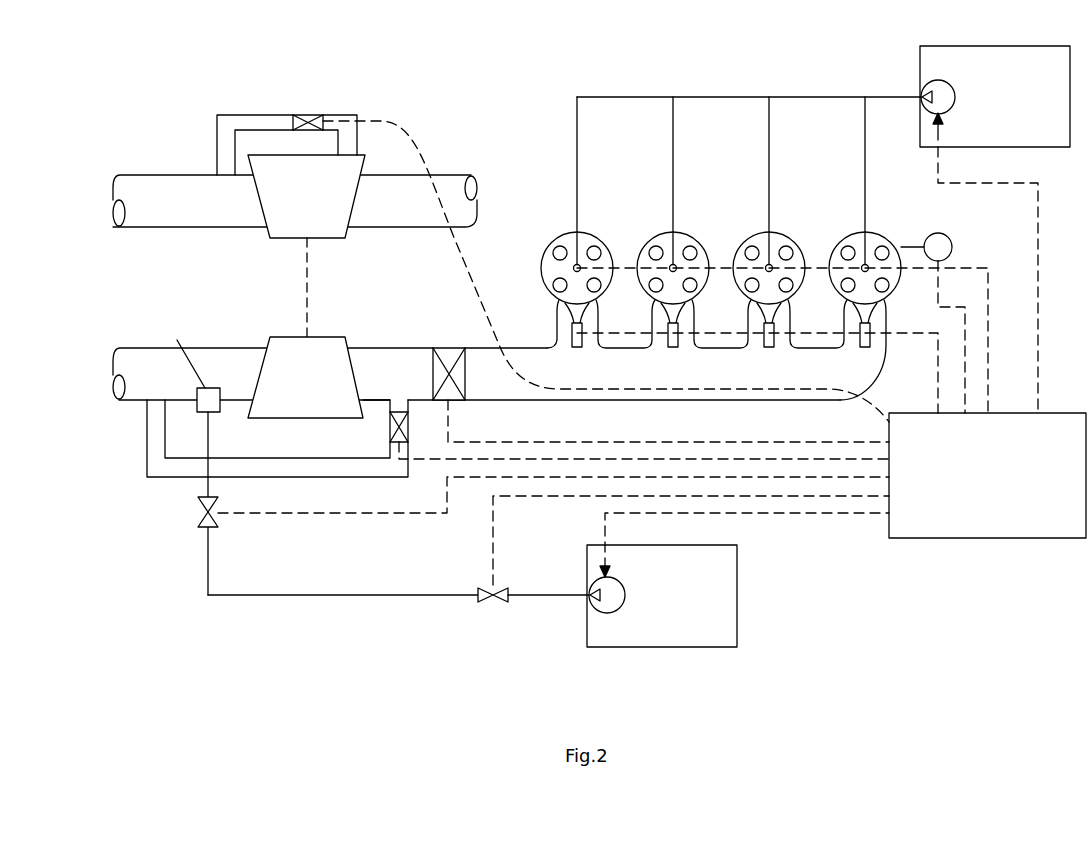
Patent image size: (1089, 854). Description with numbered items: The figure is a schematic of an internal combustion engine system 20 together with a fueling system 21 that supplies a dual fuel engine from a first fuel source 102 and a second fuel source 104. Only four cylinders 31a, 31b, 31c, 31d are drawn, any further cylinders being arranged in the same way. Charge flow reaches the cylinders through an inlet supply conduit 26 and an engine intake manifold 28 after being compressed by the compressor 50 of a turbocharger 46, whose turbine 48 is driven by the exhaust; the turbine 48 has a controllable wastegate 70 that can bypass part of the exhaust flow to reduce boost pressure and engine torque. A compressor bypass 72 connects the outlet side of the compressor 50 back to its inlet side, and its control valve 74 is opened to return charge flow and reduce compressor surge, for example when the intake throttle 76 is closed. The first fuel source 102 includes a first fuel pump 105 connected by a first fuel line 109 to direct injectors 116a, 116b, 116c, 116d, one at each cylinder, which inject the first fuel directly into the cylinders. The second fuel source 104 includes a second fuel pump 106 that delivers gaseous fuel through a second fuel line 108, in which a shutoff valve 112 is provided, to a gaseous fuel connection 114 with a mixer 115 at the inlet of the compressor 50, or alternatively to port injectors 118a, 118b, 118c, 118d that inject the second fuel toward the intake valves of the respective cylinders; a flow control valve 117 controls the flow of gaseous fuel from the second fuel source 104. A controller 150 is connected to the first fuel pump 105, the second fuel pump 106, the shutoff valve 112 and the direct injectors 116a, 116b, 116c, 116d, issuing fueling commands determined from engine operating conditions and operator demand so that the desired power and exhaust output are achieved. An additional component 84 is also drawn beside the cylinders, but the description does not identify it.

The internal combustion engine system 20 is at (490, 102).
The fueling system 21 is at (857, 559).
The inlet supply conduit 26 is at (130, 348).
The engine intake manifold 28 is at (664, 400).
The cylinder 31a is at (840, 238).
The cylinder 31b is at (744, 238).
The cylinder 31c is at (648, 238).
The cylinder 31d is at (552, 238).
The turbocharger 46 is at (286, 296).
The turbine 48 is at (306, 196).
The compressor 50 is at (305, 377).
The controllable wastegate 70 is at (308, 114).
The compressor bypass 72 is at (150, 477).
The control valve 74 is at (396, 412).
The intake throttle 76 is at (446, 348).
The exhaust gas sensor 84 is at (928, 236).
The first fuel source 102 is at (995, 96).
The second fuel source 104 is at (662, 596).
The first fuel pump 105 is at (952, 84).
The second fuel pump 106 is at (624, 604).
The second fuel line 108 is at (358, 596).
The first fuel line 109 is at (722, 98).
The shutoff valve 112 is at (198, 520).
The gaseous fuel connection 114 is at (208, 412).
The mixer 115 is at (180, 342).
The direct injector 116a is at (868, 249).
The direct injector 116b is at (772, 249).
The direct injector 116c is at (676, 249).
The direct injector 116d is at (580, 249).
The flow control valve 117 is at (495, 602).
The port injector 118a is at (863, 347).
The port injector 118b is at (767, 347).
The port injector 118c is at (671, 347).
The port injector 118d is at (575, 347).
The controller 150 is at (987, 475).